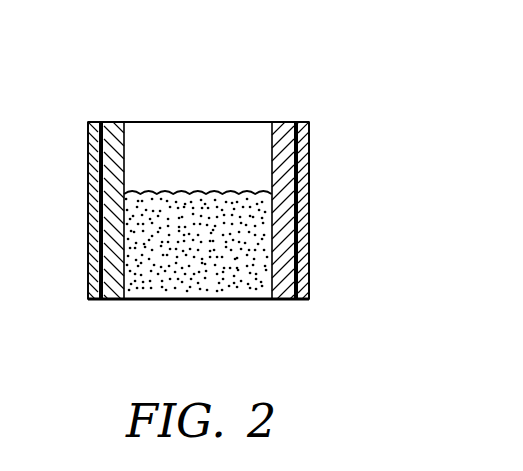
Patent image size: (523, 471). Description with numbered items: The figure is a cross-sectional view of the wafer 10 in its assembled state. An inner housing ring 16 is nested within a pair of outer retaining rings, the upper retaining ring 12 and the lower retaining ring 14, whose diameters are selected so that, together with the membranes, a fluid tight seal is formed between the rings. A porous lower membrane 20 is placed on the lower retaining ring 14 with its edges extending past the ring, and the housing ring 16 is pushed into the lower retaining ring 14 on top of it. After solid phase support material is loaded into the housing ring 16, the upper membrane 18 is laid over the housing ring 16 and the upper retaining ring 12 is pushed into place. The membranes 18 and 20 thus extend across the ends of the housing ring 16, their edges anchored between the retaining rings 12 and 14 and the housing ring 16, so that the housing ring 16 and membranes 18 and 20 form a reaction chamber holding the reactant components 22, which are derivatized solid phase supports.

The wafer 10 is at (106, 68).
The upper retaining ring 12 is at (300, 153).
The lower retaining ring 14 is at (309, 253).
The housing ring 16 is at (283, 197).
The upper membrane 18 is at (227, 122).
The lower membrane 20 is at (226, 300).
The reactant components 22 is at (192, 270).